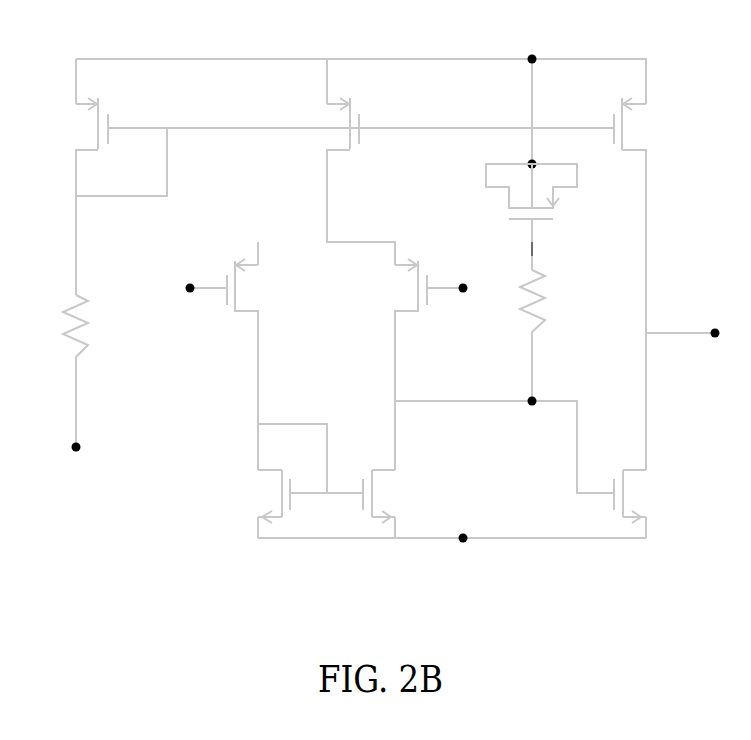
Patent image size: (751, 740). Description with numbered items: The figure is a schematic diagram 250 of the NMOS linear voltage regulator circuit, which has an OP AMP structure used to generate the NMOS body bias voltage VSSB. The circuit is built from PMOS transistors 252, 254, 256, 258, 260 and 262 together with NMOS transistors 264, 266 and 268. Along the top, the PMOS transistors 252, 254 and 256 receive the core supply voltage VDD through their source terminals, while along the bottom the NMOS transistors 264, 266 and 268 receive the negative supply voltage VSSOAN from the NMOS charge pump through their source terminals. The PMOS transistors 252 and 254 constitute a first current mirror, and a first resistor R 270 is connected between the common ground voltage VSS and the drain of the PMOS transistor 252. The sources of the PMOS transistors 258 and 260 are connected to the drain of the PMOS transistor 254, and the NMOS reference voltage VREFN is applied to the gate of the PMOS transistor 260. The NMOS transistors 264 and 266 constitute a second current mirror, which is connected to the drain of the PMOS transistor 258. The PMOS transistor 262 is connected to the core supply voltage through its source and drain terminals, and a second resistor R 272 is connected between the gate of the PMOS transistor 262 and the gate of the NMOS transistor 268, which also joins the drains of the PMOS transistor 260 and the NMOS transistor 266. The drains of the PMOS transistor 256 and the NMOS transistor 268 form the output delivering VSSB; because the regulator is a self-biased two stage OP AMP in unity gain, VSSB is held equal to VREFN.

The schematic diagram 250 is at (613, 591).
The PMOS transistor 252 is at (127, 120).
The PMOS transistor 254 is at (376, 120).
The PMOS transistor 256 is at (604, 115).
The PMOS transistor 258 is at (235, 267).
The PMOS transistor 260 is at (436, 273).
The PMOS transistor 262 is at (561, 192).
The NMOS transistor 264 is at (237, 496).
The NMOS transistor 266 is at (412, 496).
The NMOS transistor 268 is at (595, 502).
The first resistor 270 is at (50, 326).
The second resistor 272 is at (555, 301).